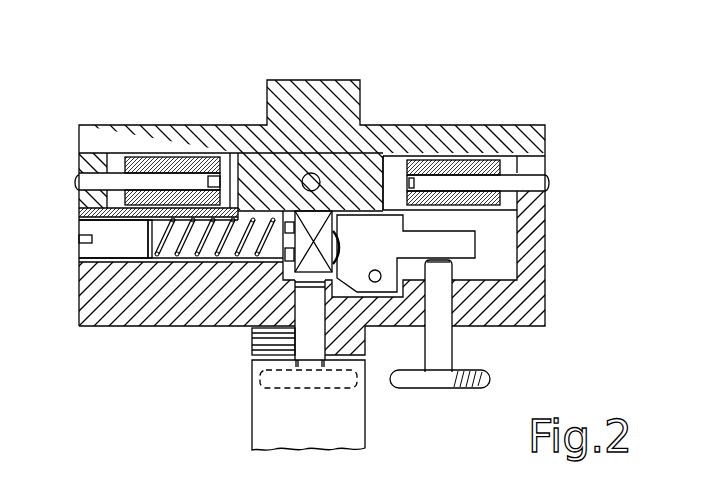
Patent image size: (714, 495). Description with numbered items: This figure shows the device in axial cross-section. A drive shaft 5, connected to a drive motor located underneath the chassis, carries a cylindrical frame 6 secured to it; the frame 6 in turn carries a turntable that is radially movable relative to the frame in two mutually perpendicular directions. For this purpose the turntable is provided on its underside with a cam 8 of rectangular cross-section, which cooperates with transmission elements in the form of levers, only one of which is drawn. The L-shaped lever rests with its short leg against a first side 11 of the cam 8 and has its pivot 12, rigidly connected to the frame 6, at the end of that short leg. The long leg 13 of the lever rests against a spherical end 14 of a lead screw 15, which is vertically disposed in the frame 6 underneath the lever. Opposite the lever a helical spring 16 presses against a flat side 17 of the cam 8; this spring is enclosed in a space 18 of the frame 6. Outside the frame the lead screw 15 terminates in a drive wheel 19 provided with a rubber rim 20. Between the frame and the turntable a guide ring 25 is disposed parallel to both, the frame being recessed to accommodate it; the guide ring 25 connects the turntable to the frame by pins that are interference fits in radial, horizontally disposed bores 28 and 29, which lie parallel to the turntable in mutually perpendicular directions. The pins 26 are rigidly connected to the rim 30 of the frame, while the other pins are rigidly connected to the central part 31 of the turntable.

The drive shaft 5 is at (352, 430).
The frame 6 is at (114, 302).
The cam 8 is at (286, 268).
The first side 11 is at (338, 270).
The pivot 12 is at (376, 283).
The long leg 13 is at (470, 246).
The spherical end 14 is at (453, 264).
The lead screw 15 is at (440, 343).
The helical spring 16 is at (150, 242).
The flat side 17 is at (272, 256).
The space 18 is at (100, 227).
The drive wheel 19 is at (490, 380).
The rubber rim 20 is at (460, 388).
The guide ring 25 is at (140, 158).
The pins 26 is at (462, 180).
The bores 28 is at (219, 178).
The bores 29 is at (316, 173).
The rim 30 is at (80, 176).
The central part 31 is at (392, 150).